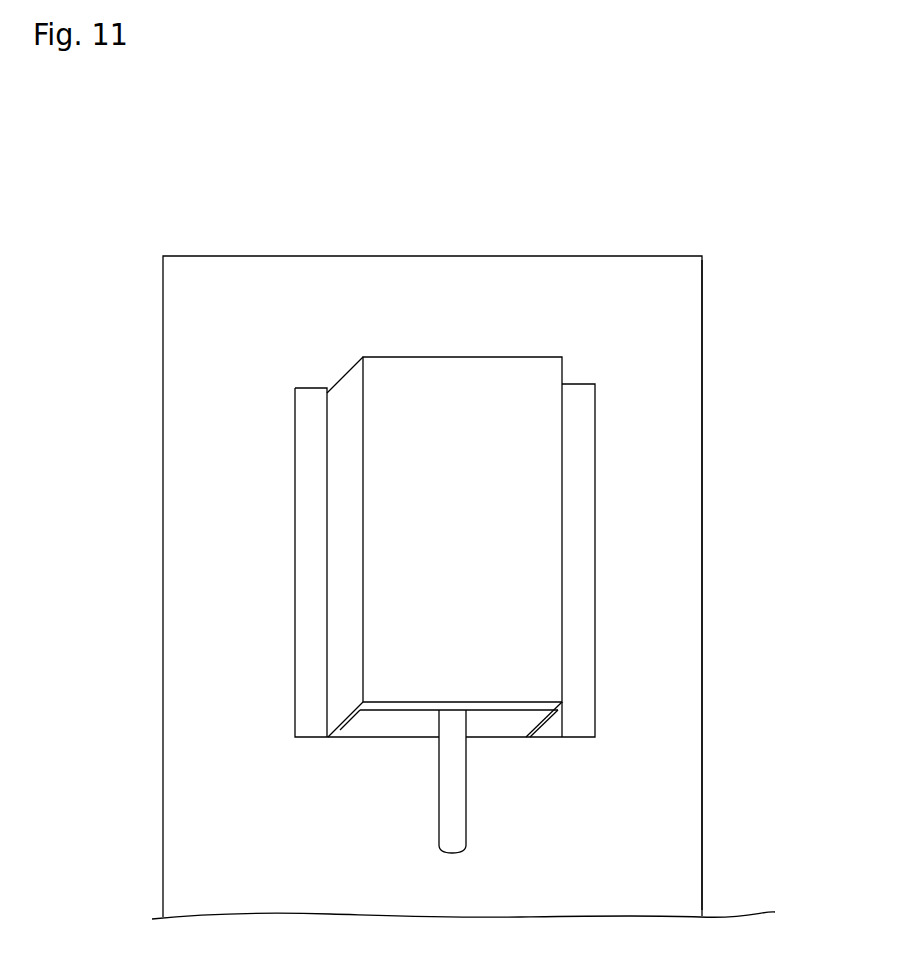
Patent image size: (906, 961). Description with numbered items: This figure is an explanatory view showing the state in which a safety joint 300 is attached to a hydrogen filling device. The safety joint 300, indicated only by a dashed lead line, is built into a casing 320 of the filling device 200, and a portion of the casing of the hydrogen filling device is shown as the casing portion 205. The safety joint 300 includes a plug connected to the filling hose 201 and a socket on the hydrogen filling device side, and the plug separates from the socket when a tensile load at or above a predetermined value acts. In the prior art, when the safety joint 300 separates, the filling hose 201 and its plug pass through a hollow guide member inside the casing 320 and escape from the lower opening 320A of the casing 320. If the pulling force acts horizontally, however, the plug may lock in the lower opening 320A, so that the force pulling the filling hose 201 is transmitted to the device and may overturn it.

The filling device 200 is at (600, 225).
The portion of the casing of the hydrogen filling device 205 is at (690, 304).
The safety joint 300 is at (427, 452).
The casing 320 is at (545, 483).
The lower opening 320A is at (365, 722).
The filling hose 201 is at (467, 800).